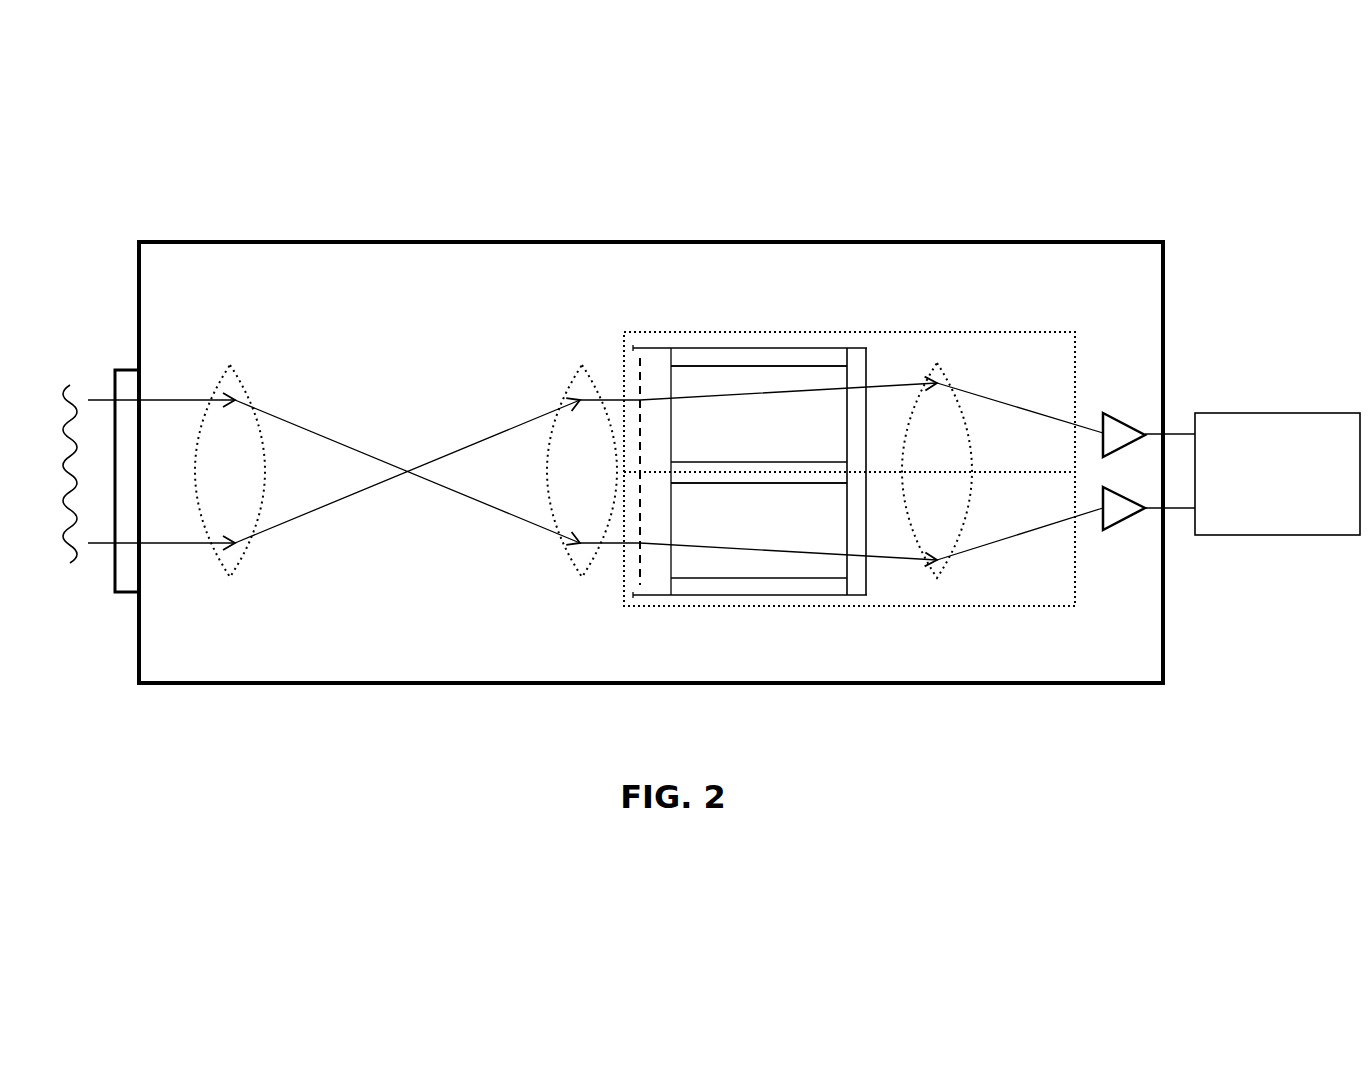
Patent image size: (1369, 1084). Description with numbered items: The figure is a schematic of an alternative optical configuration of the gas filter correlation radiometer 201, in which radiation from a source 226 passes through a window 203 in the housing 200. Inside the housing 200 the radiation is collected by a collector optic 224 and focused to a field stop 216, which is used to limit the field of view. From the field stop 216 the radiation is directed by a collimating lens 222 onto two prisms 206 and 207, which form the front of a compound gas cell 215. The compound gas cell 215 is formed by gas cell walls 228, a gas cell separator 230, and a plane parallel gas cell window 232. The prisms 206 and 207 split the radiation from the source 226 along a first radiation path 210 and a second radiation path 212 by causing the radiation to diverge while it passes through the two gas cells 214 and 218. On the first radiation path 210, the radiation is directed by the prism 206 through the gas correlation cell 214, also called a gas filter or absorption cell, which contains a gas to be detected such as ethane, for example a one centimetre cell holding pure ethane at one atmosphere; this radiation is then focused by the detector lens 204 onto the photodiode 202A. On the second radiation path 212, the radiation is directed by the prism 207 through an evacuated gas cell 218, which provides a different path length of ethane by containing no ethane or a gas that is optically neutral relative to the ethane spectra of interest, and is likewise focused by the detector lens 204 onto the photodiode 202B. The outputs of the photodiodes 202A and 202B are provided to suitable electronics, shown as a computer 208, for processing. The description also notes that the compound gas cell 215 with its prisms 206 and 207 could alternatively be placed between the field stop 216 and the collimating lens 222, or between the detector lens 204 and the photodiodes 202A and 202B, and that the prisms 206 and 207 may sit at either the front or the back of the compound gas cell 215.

The housing 200 is at (553, 241).
The gas detection system 201 is at (423, 733).
The photodiode 202A is at (1110, 530).
The photodiode 202B is at (1110, 413).
The window 203 is at (122, 598).
The detector lens 204 is at (945, 567).
The prism 206 is at (640, 553).
The prism 207 is at (640, 392).
The computer 208 is at (1240, 412).
The first radiation path 210 is at (782, 608).
The second radiation path 212 is at (757, 332).
The gas correlation cell 214 is at (695, 567).
The compound gas cell 215 is at (687, 620).
The field stop 216 is at (405, 438).
The evacuated gas cell 218 is at (683, 375).
The collimating lens 222 is at (565, 555).
The collector optic 224 is at (237, 565).
The radiation source 226 is at (67, 388).
The gas cell walls 228 is at (818, 345).
The gas cell separator 230 is at (832, 480).
The plane parallel gas cell window 232 is at (868, 364).